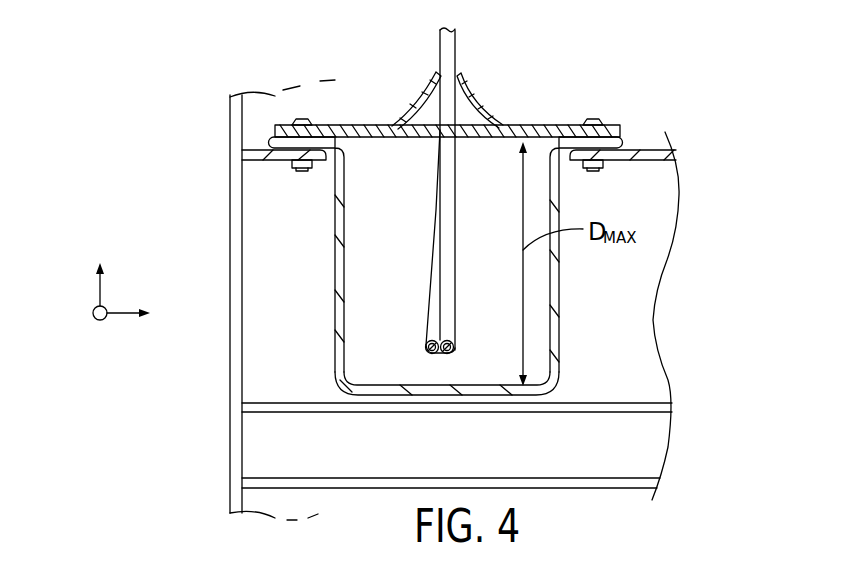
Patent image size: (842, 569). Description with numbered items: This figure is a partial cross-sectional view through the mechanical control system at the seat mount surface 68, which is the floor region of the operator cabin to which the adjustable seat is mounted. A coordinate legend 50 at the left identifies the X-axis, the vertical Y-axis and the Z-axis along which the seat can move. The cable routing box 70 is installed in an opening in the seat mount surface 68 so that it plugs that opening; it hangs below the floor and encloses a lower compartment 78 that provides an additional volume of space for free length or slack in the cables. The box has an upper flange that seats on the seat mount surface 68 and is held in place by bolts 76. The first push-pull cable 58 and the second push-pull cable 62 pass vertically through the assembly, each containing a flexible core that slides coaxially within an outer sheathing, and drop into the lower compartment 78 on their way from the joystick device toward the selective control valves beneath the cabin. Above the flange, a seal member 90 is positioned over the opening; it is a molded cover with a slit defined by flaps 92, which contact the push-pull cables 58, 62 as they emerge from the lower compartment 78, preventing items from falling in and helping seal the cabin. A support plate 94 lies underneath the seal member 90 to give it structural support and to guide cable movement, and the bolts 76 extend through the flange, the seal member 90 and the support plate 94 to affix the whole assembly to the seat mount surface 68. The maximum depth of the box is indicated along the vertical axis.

The coordinate legend 50 is at (102, 290).
The first push-pull cable 58 is at (430, 303).
The second push-pull cable 62 is at (452, 298).
The seat mount surface 68 is at (648, 148).
The cable routing box 70 is at (568, 297).
The bolts 76 is at (302, 117).
The lower compartment 78 is at (372, 349).
The seal member 90 is at (531, 125).
The flaps 92 is at (420, 97).
The support plate 94 is at (388, 138).